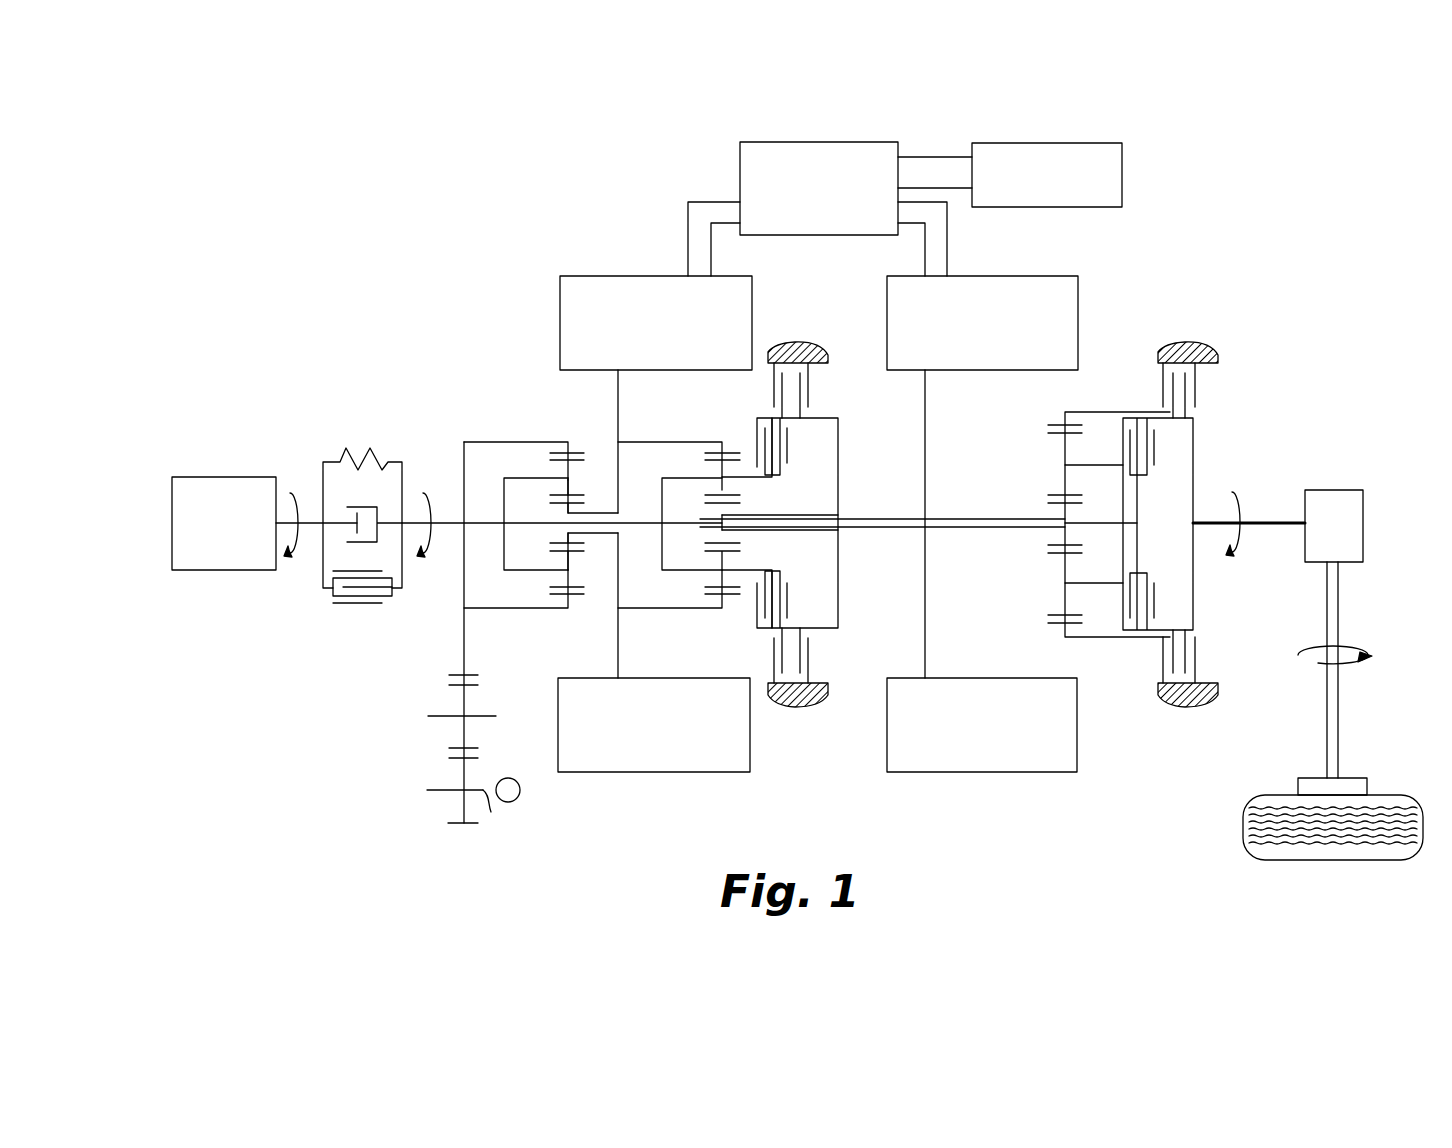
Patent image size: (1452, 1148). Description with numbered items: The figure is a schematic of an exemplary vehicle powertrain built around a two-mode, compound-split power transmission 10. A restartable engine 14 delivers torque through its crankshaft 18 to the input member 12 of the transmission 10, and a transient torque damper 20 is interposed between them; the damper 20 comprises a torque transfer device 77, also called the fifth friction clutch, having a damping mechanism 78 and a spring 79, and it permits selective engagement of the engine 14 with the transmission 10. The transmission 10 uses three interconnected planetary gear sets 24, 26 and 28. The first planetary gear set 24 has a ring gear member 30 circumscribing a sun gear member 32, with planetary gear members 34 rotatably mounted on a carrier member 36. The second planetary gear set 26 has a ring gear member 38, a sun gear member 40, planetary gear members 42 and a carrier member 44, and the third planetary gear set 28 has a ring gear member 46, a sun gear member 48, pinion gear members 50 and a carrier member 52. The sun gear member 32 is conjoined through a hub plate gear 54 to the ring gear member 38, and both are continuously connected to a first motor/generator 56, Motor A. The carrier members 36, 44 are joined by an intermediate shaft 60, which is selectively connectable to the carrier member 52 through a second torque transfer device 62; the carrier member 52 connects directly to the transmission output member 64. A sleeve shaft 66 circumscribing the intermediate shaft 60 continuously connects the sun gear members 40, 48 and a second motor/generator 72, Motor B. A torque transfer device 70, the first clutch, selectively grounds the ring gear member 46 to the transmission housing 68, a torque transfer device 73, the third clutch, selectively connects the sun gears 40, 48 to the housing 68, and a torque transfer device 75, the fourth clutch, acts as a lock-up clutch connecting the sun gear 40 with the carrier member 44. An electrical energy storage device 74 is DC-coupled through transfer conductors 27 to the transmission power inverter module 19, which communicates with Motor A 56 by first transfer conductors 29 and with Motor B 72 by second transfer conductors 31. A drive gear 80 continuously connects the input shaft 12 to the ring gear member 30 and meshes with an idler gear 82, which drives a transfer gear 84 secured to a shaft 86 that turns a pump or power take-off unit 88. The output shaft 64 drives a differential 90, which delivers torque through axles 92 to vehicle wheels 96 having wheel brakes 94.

The two-mode compound-split power transmission 10 is at (452, 228).
The input member 12 is at (442, 523).
The restartable engine 14 is at (207, 477).
The engine output member or crankshaft 18 is at (316, 523).
The transmission power inverter module (TPIM) 19 is at (740, 172).
The transient torque damper 20 is at (315, 352).
The first planetary gear set 24 is at (548, 421).
The second planetary gear set 26 is at (722, 424).
The DC lines or transfer conductors 27 is at (950, 157).
The third planetary gear set 28 is at (1052, 410).
The first transfer conductors 29 is at (688, 245).
The ring gear member of first planetary gear set 30 is at (568, 452).
The second transfer conductors 31 is at (947, 258).
The sun gear member of first planetary gear set 32 is at (568, 514).
The planetary gear members of first planetary gear set 34 is at (568, 473).
The carrier member of first planetary gear set 36 is at (504, 548).
The ring gear member of second planetary gear set 38 is at (722, 452).
The sun gear member of second planetary gear set 40 is at (722, 515).
The planetary gear members of second planetary gear set 42 is at (722, 478).
The carrier member of second planetary gear set 44 is at (662, 560).
The ring gear member of third planetary gear set 46 is at (1048, 428).
The sun gear member of third planetary gear set 48 is at (1050, 506).
The planetary or pinion gear members of third planetary gear set 50 is at (1065, 459).
The carrier member of third planetary gear set 52 is at (1193, 445).
The hub plate gear 54 is at (618, 493).
The first motor/generator (Motor A) 56 is at (560, 300).
The intermediate shaft 60 is at (905, 527).
The second torque transfer device (clutch C2) 62 is at (1156, 492).
The transmission output member 64 is at (1280, 517).
The sleeve shaft 66 is at (880, 519).
The transmission housing 68 is at (812, 342).
The torque transfer device (clutch C1) 70 is at (1143, 373).
The second motor/generator (Motor B) 72 is at (1078, 292).
The torque transfer device (clutch C3) 73 is at (826, 385).
The electrical energy storage device (ESD) 74 is at (1122, 172).
The torque transfer device (clutch C4) 75 is at (801, 467).
The torque transfer device (friction clutch C5) 77 is at (340, 592).
The damping mechanism 78 is at (355, 507).
The spring 79 is at (345, 462).
The drive gear 80 is at (463, 583).
The idler gear 82 is at (463, 701).
The transfer gear 84 is at (463, 813).
The shaft 86 is at (489, 817).
The hydraulic/transmission fluid pump and/or power take-off unit 88 is at (515, 802).
The differential 90 is at (1303, 548).
The vehicular axles 92 is at (1340, 608).
The wheel brake 94 is at (1368, 786).
The vehicle wheel 96 is at (1262, 856).